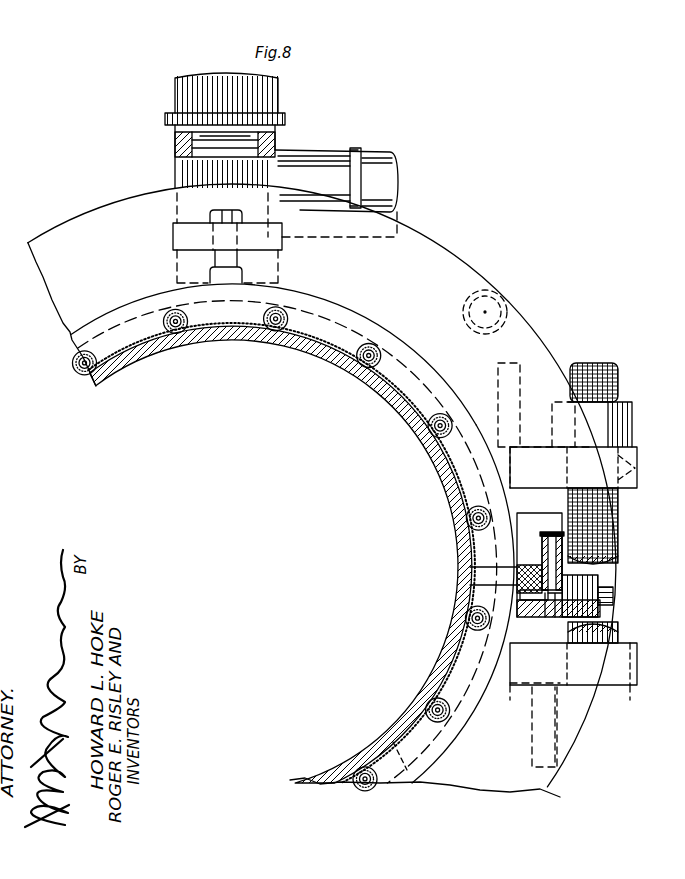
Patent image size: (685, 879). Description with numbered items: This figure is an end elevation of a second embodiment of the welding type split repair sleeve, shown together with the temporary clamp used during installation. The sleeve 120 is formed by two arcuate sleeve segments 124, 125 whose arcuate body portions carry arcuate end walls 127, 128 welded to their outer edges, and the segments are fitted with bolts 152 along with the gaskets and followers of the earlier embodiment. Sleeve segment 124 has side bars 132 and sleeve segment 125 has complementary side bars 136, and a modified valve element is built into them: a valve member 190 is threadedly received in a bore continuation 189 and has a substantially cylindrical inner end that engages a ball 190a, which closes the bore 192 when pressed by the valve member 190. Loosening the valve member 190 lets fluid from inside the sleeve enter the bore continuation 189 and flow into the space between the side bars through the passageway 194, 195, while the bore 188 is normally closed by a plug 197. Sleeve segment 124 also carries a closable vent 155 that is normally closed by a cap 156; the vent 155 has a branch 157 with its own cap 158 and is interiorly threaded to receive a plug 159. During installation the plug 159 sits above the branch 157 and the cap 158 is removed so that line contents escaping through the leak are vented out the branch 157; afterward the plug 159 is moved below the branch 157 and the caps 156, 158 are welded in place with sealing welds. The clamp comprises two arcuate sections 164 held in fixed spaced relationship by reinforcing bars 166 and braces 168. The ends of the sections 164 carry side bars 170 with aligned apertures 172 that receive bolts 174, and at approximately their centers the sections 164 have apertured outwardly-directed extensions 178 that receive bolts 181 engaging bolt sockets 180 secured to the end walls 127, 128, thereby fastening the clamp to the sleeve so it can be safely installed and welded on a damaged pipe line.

The sleeve 120 is at (420, 237).
The arcuate sleeve segment 124 is at (378, 397).
The arcuate sleeve segment 125 is at (392, 740).
The arcuate end wall 127 is at (372, 336).
The arcuate end wall 128 is at (458, 739).
The side bars 132 is at (523, 535).
The side bars 136 is at (530, 584).
The bolts 152 is at (352, 328).
The closable vent 155 is at (178, 167).
The cap 156 is at (278, 90).
The branch 157 is at (298, 164).
The cap 158 is at (395, 158).
The plug 159 is at (200, 152).
The arcuate sections 164 is at (464, 284).
The reinforcing bars 166 is at (502, 302).
The braces 168 is at (527, 372).
The side bars 170 is at (636, 453).
The aligned apertures 172 is at (638, 487).
The bolts 174 is at (616, 378).
The apertured outwardly-directed extensions 178 is at (173, 237).
The bolt sockets 180 is at (242, 279).
The bolts 181 is at (225, 219).
The bore 188 is at (600, 612).
The bore continuation 189 is at (546, 619).
The valve member 190 is at (566, 619).
The ball 190a is at (520, 612).
The bore 192 is at (520, 597).
The passageway 194 is at (590, 567).
The passageway 195 is at (545, 530).
The plug 197 is at (613, 596).